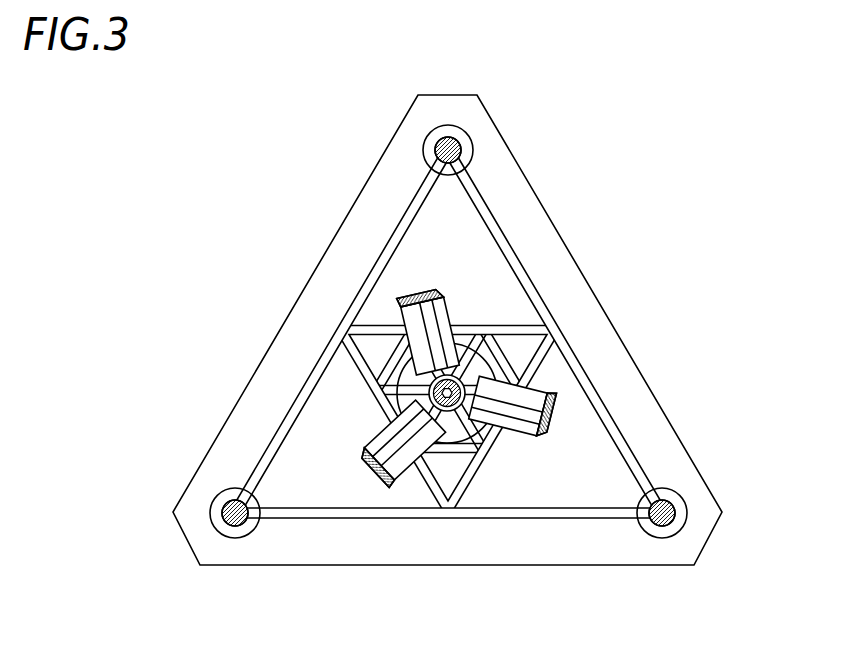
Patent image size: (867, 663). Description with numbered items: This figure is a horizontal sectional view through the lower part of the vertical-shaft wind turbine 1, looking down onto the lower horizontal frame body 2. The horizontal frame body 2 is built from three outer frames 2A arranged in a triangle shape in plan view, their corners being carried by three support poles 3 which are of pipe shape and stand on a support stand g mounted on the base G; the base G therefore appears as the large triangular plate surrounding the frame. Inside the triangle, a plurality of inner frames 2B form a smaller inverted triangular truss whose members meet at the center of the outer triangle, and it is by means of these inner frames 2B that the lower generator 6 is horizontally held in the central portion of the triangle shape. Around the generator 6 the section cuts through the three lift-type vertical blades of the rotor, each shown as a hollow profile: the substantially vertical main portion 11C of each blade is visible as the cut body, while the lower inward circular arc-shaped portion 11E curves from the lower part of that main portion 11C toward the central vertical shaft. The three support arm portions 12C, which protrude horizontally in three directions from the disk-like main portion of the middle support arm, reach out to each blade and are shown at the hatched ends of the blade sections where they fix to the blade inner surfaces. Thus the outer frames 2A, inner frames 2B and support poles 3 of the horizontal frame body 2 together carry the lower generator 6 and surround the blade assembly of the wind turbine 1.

The vertical-shaft wind turbine 1 is at (449, 351).
The horizontal frame body 2 is at (449, 385).
The outer frame 2A is at (498, 225).
The inner frame 2B is at (342, 332).
The support pole 3 is at (460, 150).
The lower generator 6 is at (392, 402).
The lower inward circular arc-shaped portion 11E is at (477, 358).
The substantially vertical main portion 11C is at (418, 302).
The support arm portion 12C is at (477, 288).
The base G is at (641, 372).
The support stand g is at (434, 150).